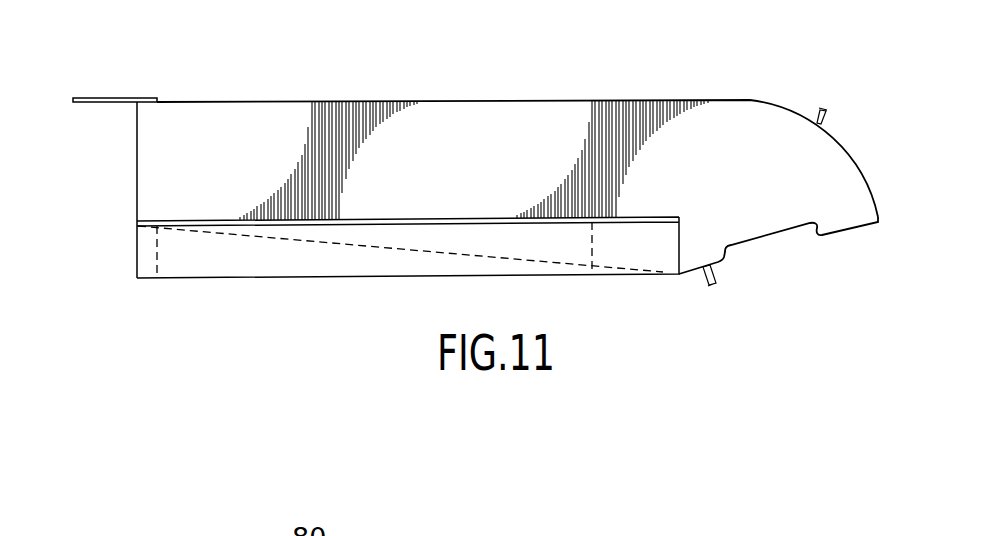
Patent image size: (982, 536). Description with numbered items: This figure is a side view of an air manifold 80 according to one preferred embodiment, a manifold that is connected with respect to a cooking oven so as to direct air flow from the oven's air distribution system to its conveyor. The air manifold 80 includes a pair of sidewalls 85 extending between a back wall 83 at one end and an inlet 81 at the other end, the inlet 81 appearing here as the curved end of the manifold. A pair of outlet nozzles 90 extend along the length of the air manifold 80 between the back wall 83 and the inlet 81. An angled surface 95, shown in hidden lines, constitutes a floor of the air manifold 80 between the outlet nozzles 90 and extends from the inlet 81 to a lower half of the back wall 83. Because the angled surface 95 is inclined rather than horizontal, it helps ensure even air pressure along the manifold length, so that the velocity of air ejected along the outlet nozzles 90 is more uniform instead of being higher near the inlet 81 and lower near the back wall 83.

The air manifold 80 is at (471, 174).
The inlet 81 is at (768, 237).
The back wall 83 is at (135, 161).
The sidewalls 85 is at (405, 102).
The outlet nozzles 90 is at (223, 279).
The angled surface 95 is at (358, 251).